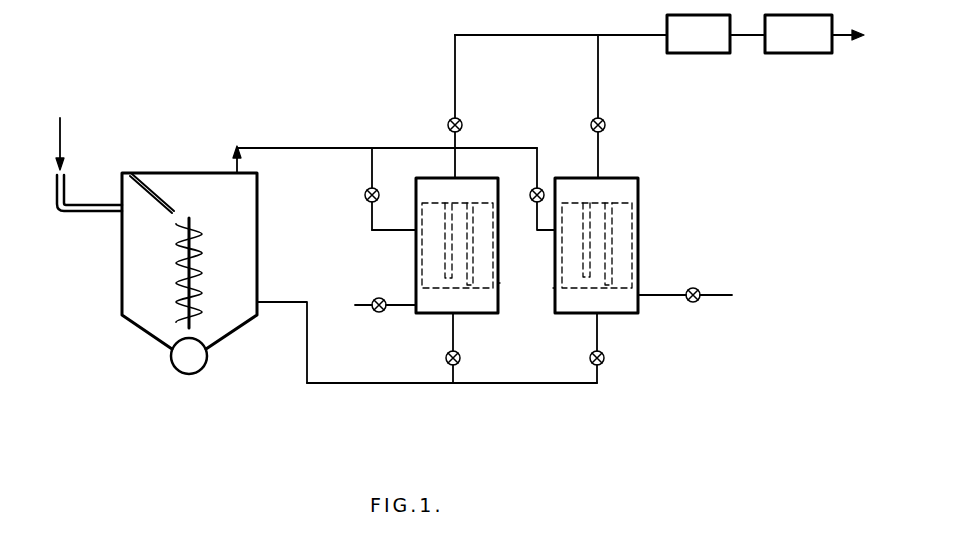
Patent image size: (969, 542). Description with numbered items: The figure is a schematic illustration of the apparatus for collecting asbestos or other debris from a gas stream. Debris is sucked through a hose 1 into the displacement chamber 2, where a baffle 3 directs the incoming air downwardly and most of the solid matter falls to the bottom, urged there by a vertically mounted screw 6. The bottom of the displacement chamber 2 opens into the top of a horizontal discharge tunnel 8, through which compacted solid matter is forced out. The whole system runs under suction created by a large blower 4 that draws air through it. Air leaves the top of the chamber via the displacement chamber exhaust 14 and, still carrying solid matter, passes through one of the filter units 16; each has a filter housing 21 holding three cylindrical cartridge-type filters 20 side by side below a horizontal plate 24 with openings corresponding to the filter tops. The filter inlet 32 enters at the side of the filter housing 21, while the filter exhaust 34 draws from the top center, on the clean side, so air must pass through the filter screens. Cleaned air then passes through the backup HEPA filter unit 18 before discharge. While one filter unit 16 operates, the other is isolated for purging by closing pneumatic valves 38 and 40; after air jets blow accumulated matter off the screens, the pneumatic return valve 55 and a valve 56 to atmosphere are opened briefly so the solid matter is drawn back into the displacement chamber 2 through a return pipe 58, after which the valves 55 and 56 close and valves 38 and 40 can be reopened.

The hose 1 is at (82, 213).
The displacement chamber 2 is at (137, 263).
The baffle 3 is at (163, 193).
The blower 4 is at (800, 53).
The screw 6 is at (200, 262).
The discharge tunnel 8 is at (189, 356).
The displacement chamber exhaust 14 is at (257, 148).
The filter unit 16 is at (555, 288).
The backup HEPA filter unit 18 is at (705, 53).
The cartridge-type filter 20 is at (482, 285).
The filter housing 21 is at (416, 268).
The horizontal plate 24 is at (620, 202).
The filter inlet 32 is at (393, 232).
The filter exhaust 34 is at (455, 52).
The pneumatic valve 38 is at (365, 193).
The pneumatic valve 40 is at (450, 119).
The pneumatic return valve 55 is at (460, 360).
The valve to atmosphere 56 is at (380, 312).
The return pipe 58 is at (313, 385).